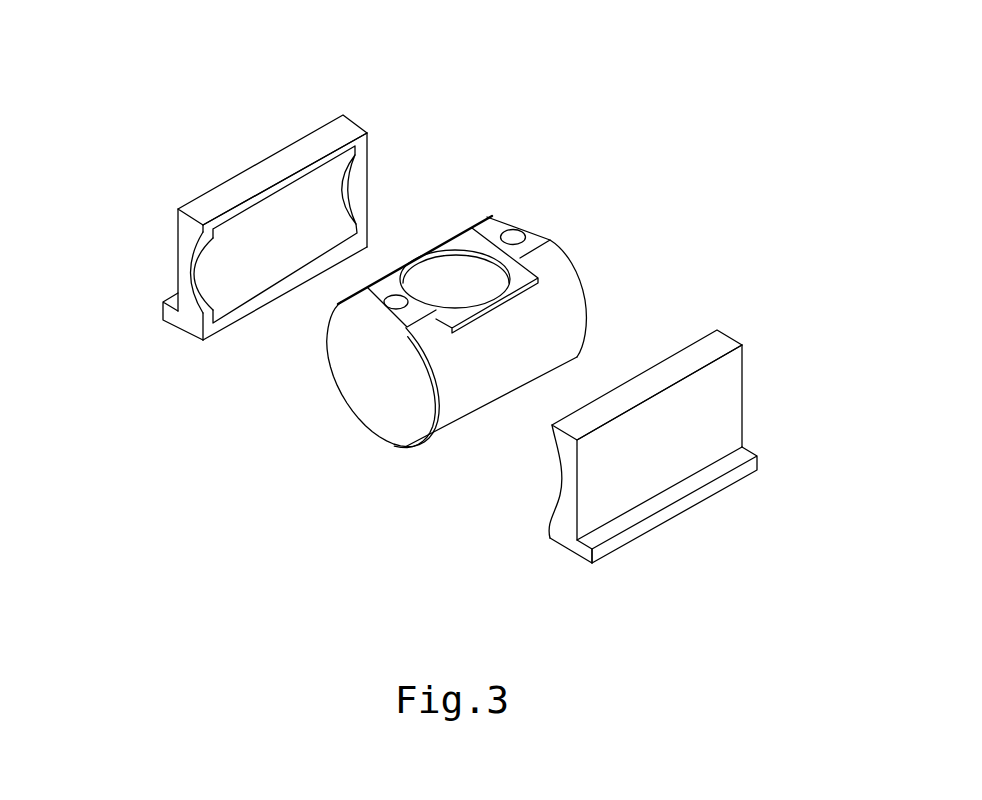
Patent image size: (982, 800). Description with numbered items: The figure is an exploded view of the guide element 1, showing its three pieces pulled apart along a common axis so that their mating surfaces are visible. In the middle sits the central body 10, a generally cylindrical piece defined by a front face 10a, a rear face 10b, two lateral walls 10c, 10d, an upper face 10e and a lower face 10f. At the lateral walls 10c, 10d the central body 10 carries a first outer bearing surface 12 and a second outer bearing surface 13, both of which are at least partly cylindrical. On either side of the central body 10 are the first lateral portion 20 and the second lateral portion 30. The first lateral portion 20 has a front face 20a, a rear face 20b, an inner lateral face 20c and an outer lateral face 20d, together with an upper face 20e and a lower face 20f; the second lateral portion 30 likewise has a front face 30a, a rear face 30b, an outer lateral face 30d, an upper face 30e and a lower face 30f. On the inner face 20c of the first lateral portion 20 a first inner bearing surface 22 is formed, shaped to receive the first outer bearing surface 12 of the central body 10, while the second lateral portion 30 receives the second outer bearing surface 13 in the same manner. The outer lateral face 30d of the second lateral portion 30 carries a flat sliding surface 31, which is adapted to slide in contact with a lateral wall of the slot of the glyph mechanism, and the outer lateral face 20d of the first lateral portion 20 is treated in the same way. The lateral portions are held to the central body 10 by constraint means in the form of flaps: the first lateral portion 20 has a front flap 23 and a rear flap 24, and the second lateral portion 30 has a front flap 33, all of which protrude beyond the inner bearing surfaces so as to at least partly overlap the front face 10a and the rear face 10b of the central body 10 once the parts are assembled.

The guide element 1 is at (123, 102).
The central body 10 is at (600, 176).
The front face 10a is at (372, 403).
The rear face 10b is at (585, 288).
The lateral wall 10c is at (466, 224).
The lateral wall 10d is at (542, 344).
The upper face 10e is at (512, 217).
The lower face 10f is at (384, 444).
The first outer bearing surface 12 is at (328, 322).
The second outer bearing surface 13 is at (462, 402).
The first lateral portion 20 is at (235, 120).
The front face 20a is at (177, 318).
The rear face 20b is at (374, 140).
The inner lateral face 20c is at (254, 225).
The outer lateral face 20d is at (176, 247).
The upper face 20e is at (285, 156).
The lower face 20f is at (190, 345).
The first inner bearing surface 22 is at (308, 198).
The front flap 23 is at (198, 280).
The rear flap 24 is at (359, 182).
The second lateral portion 30 is at (783, 300).
The front face 30a is at (557, 528).
The rear face 30b is at (744, 395).
The outer lateral face 30d is at (719, 425).
The upper face 30e is at (663, 376).
The lower face 30f is at (569, 560).
The flat sliding surface 31 is at (637, 473).
The front flap 33 is at (558, 488).